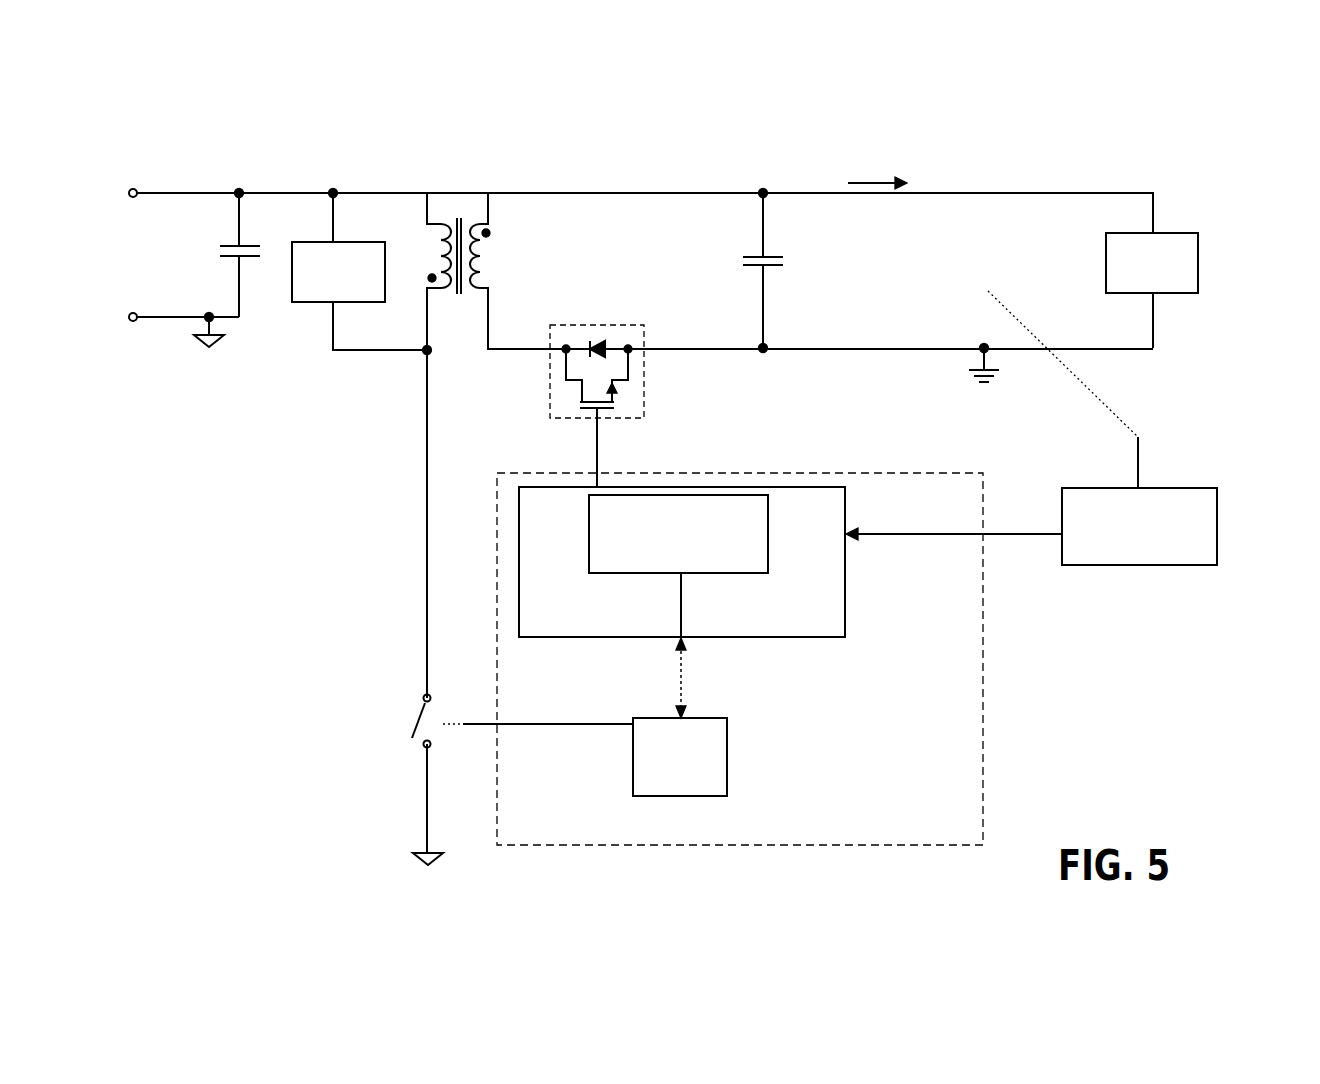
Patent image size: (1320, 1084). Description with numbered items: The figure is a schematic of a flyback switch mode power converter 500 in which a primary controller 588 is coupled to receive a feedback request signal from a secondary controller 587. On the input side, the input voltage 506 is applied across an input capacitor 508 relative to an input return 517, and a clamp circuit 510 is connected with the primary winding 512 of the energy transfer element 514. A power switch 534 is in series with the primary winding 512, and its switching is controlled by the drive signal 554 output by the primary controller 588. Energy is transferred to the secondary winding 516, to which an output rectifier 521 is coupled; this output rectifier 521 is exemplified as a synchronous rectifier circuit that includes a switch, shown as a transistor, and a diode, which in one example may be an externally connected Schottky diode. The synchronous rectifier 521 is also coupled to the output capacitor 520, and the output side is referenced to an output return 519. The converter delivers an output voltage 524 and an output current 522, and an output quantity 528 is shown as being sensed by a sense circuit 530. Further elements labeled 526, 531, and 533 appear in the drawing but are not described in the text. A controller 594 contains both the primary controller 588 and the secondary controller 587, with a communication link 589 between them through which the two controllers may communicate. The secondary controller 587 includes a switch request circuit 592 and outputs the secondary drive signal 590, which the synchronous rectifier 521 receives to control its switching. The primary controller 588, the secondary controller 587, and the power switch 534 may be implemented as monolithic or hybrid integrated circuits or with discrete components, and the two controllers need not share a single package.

The power converter 500 is at (1141, 124).
The input voltage 506 is at (176, 235).
The input capacitor 508 is at (250, 268).
The clamp circuit 510 is at (306, 312).
The primary winding 512 is at (426, 247).
The energy transfer element 514 is at (458, 217).
The secondary winding 516 is at (503, 246).
The input return 517 is at (204, 348).
The output return 519 is at (995, 392).
The output capacitor 520 is at (708, 240).
The output rectifier 521 is at (586, 322).
The output current 522 is at (893, 164).
The output voltage 524 is at (822, 250).
The load 526 is at (1183, 229).
The output quantity 528 is at (985, 266).
The sense circuit 530 is at (1220, 523).
The feedback signal UFB 531 is at (1010, 501).
The feedback request signal UFBR 533 is at (746, 606).
The power switch 534 is at (405, 727).
The drive signal 554 is at (466, 735).
The secondary controller 587 is at (850, 621).
The primary controller 588 is at (732, 771).
The communication link 589 is at (688, 693).
The secondary drive signal 590 is at (588, 444).
The switch request circuit 592 is at (590, 514).
The controller 594 is at (985, 746).